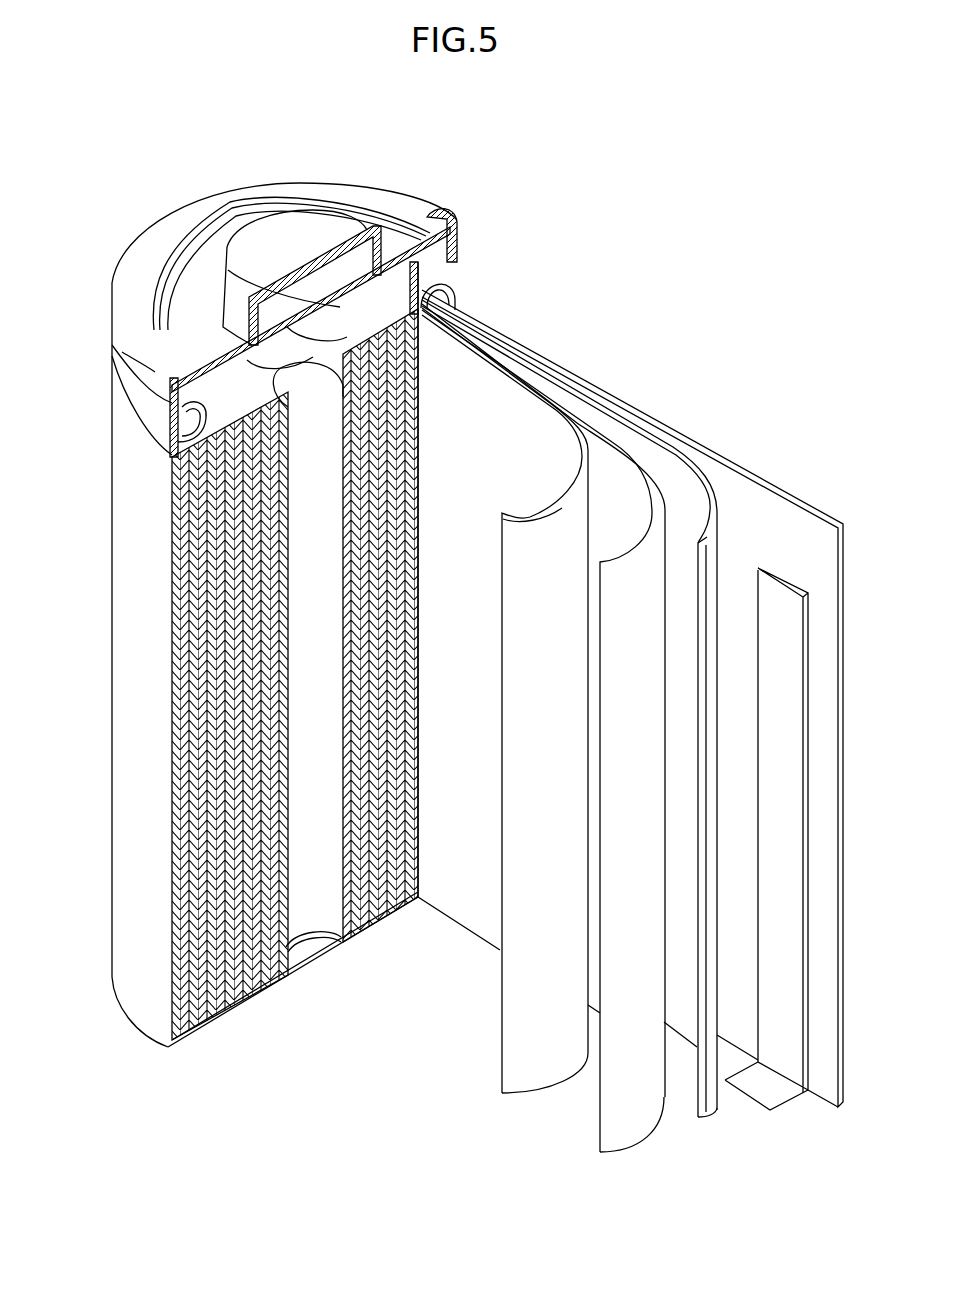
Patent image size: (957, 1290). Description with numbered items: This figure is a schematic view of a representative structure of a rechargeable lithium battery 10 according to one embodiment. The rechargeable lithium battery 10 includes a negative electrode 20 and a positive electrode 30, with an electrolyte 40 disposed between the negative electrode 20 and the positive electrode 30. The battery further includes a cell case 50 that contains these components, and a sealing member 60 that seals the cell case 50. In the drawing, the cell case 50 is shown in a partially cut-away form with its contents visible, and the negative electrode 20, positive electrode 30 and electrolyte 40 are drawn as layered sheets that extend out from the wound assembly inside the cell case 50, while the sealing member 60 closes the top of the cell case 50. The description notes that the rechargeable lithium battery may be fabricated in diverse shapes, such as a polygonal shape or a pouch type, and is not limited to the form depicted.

The rechargeable lithium battery 10 is at (528, 158).
The negative electrode 20 is at (773, 517).
The positive electrode 30 is at (548, 402).
The electrolyte 40 is at (610, 445).
The cell case 50 is at (124, 626).
The sealing member 60 is at (295, 236).